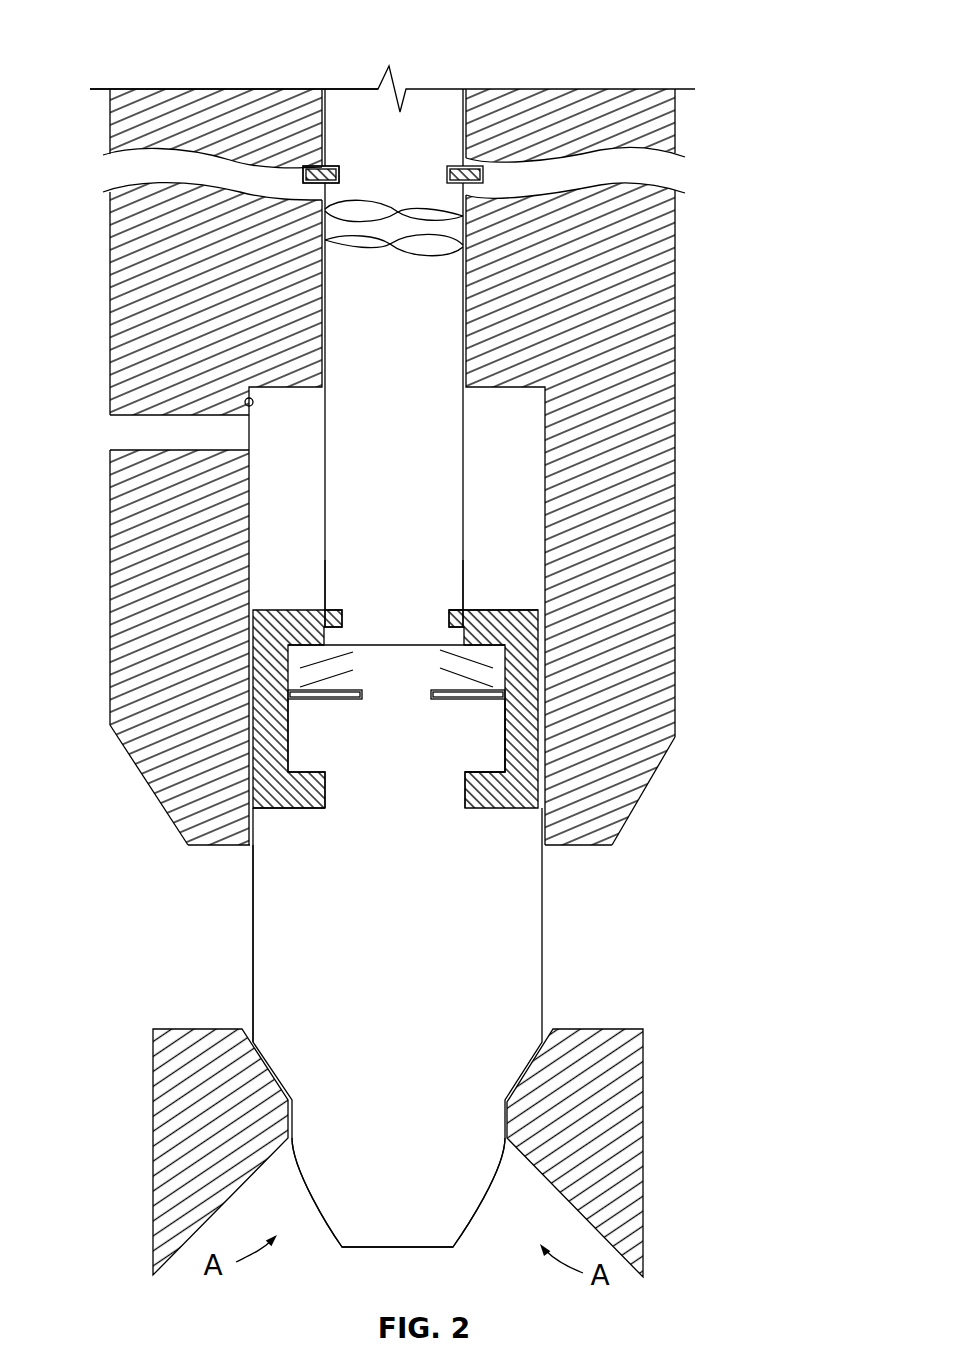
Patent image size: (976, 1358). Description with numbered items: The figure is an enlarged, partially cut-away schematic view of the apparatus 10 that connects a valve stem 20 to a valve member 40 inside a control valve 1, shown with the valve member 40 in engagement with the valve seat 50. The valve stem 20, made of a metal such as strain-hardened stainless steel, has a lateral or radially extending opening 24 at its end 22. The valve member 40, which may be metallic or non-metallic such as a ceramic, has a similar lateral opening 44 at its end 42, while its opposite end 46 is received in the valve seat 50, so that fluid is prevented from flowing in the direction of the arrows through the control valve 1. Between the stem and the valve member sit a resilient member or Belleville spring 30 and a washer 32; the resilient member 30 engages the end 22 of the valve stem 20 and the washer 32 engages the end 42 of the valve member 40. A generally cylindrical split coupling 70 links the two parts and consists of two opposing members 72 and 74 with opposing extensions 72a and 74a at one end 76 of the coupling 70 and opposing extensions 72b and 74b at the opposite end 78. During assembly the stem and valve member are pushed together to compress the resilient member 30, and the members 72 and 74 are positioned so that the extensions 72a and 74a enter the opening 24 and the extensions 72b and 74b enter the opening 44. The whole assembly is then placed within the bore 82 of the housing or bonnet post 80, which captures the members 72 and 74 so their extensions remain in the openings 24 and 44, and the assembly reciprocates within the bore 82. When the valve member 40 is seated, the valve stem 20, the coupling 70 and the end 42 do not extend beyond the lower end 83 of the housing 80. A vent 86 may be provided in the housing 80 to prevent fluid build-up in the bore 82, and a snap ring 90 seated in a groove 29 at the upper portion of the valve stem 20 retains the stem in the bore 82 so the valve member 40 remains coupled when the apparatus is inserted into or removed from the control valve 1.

The control valve 1 is at (118, 942).
The apparatus 10 is at (112, 36).
The valve stem 20 is at (435, 283).
The end of the valve stem 22 is at (443, 600).
The lateral or radially extending opening 24 is at (330, 610).
The groove 29 is at (331, 165).
The resilient member or Belleville spring 30 is at (469, 664).
The washer 32 is at (463, 697).
The valve member 40 is at (528, 930).
The end of the valve member 42 is at (375, 754).
The lateral or radially extending opening 44 is at (548, 812).
The opposite end of the valve member 46 is at (473, 1198).
The valve seat 50 is at (645, 1082).
The split coupling 70 is at (520, 777).
The member of the coupling 72 is at (270, 692).
The extension 72a is at (341, 608).
The extension 72b is at (312, 798).
The member of the coupling 74 is at (527, 727).
The extension 74a is at (449, 613).
The extension 74b is at (482, 798).
The end of the coupling 76 is at (533, 597).
The opposite end of the coupling 78 is at (279, 834).
The housing or bonnet post 80 is at (657, 427).
The bore 82 is at (247, 402).
The lower end of the housing 83 is at (183, 802).
The vent 86 is at (128, 437).
The snap ring 90 is at (303, 175).